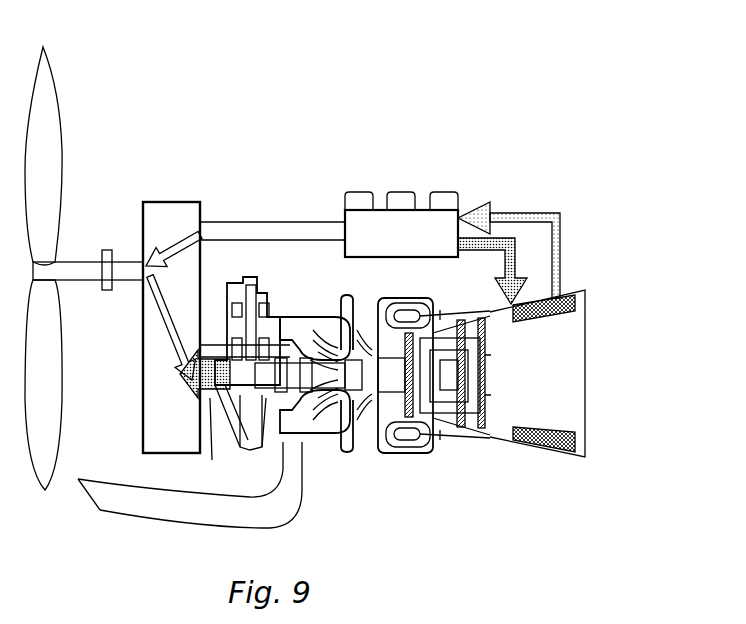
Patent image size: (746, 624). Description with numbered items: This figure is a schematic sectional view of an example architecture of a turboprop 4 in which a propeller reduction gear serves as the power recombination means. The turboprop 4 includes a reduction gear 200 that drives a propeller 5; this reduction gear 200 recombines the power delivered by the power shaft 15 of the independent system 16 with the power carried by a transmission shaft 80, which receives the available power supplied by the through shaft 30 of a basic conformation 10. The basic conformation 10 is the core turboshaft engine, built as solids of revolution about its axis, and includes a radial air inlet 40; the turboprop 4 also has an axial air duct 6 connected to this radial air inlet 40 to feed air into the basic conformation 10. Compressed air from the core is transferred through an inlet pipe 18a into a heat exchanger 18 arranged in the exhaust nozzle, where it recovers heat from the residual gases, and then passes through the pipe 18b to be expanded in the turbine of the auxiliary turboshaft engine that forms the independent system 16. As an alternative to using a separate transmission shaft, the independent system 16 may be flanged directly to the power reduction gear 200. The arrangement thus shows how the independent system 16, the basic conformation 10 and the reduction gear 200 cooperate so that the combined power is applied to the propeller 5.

The propeller 5 is at (43, 72).
The reduction gear 200 is at (176, 203).
The power shaft 15 is at (270, 228).
The independent system 16 is at (401, 224).
The pipe 18b is at (535, 212).
The inlet pipe 18a is at (483, 246).
The heat exchanger 18 is at (553, 305).
The radial air inlet 40 is at (286, 332).
The transmission shaft 80 is at (212, 452).
The through shaft 30 is at (252, 446).
The basic conformation 10 is at (360, 422).
The turboprop 4 is at (440, 469).
The axial air duct 6 is at (118, 500).